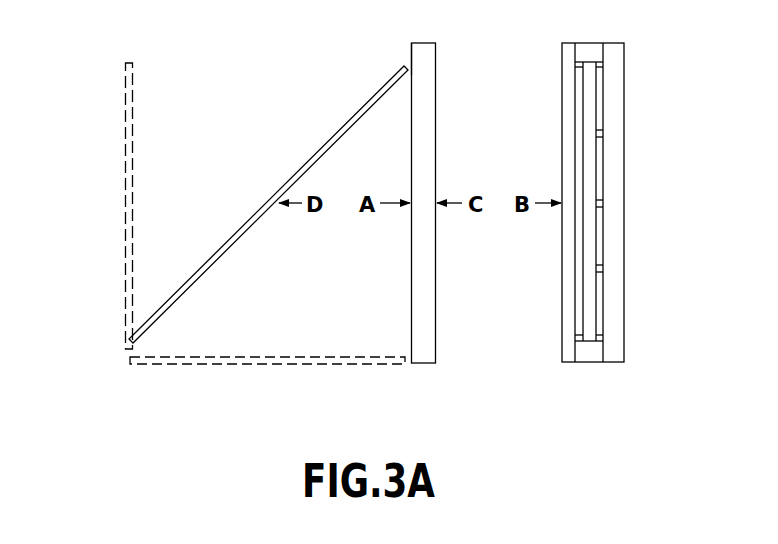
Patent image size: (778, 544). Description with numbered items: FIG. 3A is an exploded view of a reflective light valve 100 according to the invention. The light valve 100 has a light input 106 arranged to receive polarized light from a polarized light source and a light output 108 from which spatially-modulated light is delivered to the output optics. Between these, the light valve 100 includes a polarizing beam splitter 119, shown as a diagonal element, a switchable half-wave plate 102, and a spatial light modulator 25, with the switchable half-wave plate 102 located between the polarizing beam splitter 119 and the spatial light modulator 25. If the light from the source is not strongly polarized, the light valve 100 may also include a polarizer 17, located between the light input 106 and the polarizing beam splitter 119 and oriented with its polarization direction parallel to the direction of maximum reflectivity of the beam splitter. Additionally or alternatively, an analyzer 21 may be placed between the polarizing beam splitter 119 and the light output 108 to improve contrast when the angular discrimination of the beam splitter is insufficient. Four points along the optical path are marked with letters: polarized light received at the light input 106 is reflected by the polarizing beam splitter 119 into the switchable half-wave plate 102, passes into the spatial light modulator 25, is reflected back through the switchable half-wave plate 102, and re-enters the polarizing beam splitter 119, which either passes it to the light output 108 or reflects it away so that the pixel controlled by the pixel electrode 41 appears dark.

The light valve 100 is at (335, 283).
The switchable half-wave plate 102 is at (409, 55).
The polarizing beam splitter 119 is at (348, 121).
The analyzer 21 is at (132, 115).
The light output 108 is at (115, 206).
The polarizer 17 is at (172, 365).
The light input 106 is at (267, 393).
The spatial light modulator 25 is at (623, 202).
The pixel electrode 41 is at (603, 160).